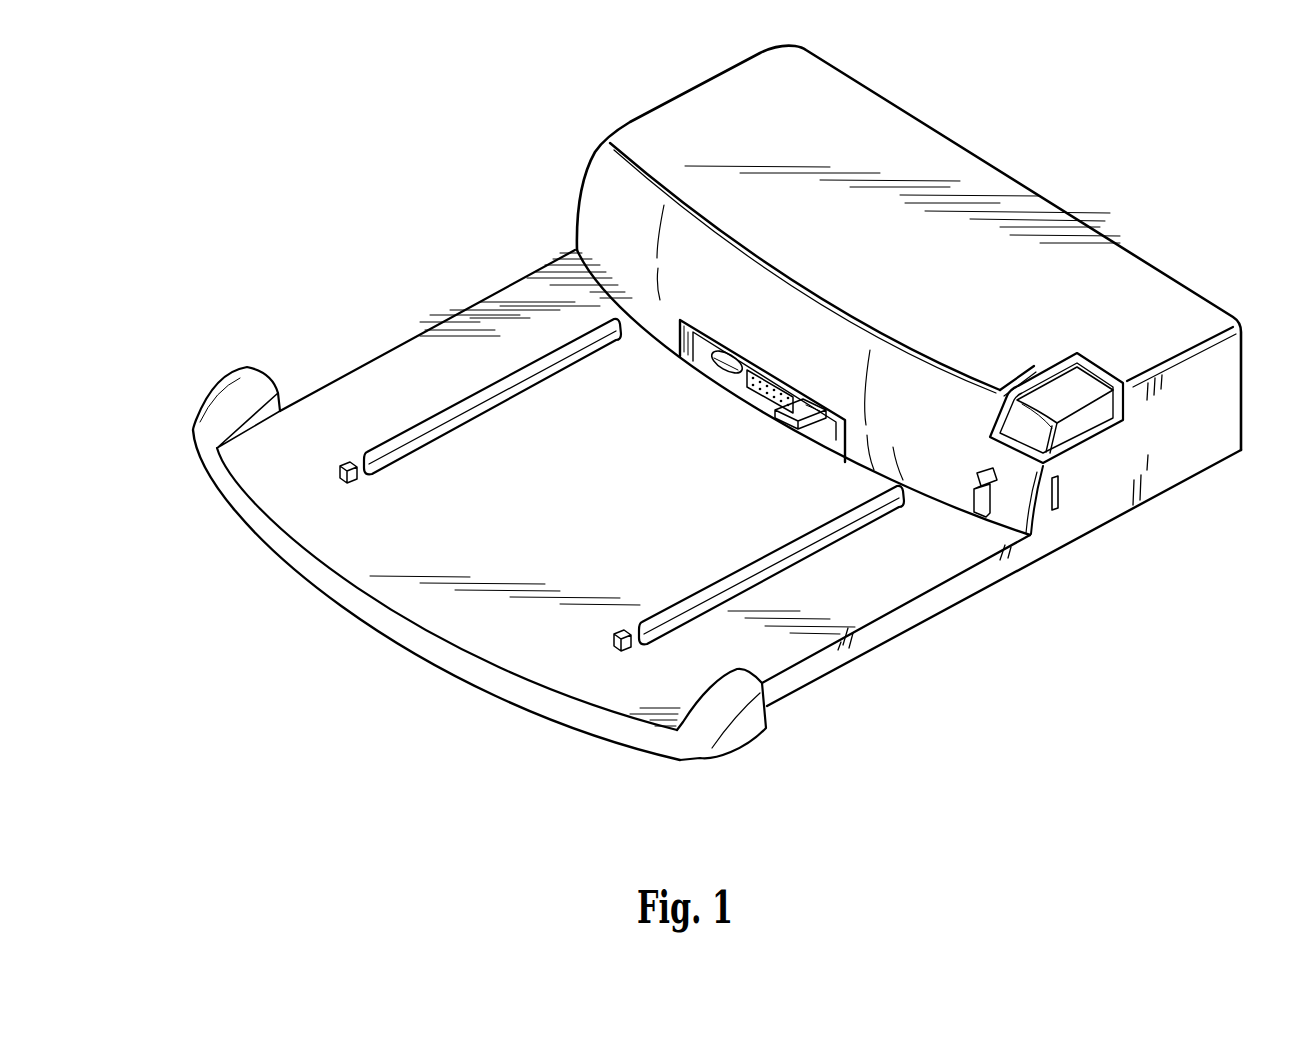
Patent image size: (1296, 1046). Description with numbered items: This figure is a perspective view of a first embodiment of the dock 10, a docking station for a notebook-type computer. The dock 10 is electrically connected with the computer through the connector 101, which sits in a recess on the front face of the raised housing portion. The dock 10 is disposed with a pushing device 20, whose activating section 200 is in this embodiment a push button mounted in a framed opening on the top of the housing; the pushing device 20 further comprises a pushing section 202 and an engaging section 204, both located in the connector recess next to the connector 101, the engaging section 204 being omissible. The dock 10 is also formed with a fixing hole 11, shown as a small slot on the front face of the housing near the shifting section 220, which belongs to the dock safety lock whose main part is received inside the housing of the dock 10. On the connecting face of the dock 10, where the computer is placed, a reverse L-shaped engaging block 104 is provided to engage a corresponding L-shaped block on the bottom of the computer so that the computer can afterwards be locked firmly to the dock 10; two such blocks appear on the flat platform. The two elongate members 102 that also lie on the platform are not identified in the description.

The dock 10 is at (1010, 178).
The pushing device 20 is at (1063, 391).
The activating section 200 is at (1097, 413).
The fixing hole 11 is at (1063, 497).
The shifting section 220 is at (977, 503).
The connector 101 is at (773, 380).
The pushing section 202 is at (707, 367).
The engaging section 204 is at (797, 430).
The guide rails 102 is at (530, 380).
The reverse L-shaped engaging block 104 is at (357, 485).